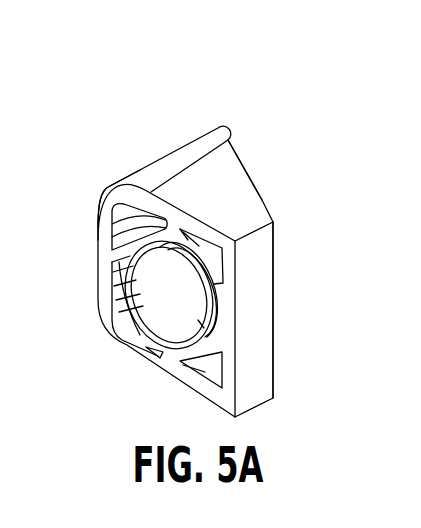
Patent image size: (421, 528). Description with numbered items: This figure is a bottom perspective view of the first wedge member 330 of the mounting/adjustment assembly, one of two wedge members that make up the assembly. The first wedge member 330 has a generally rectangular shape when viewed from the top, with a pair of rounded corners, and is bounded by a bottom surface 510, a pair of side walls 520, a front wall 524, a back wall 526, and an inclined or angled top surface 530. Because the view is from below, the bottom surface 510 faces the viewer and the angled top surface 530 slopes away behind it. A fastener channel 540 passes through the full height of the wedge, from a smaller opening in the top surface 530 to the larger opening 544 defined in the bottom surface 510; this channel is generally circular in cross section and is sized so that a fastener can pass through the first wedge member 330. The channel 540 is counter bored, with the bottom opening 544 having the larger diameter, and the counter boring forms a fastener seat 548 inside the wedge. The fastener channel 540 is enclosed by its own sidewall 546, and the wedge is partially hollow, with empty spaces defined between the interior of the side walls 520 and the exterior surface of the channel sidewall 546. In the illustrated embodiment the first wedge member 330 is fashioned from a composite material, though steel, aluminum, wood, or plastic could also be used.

The first wedge member 330 is at (265, 122).
The bottom surface 510 is at (113, 262).
The side walls 520 is at (219, 189).
The front wall 524 is at (263, 312).
The back wall 526 is at (100, 189).
The inclined or angled top surface 530 is at (263, 197).
The fastener channel 540 is at (145, 326).
The opening 544 is at (181, 334).
The sidewall 546 is at (134, 316).
The fastener seat 548 is at (225, 349).